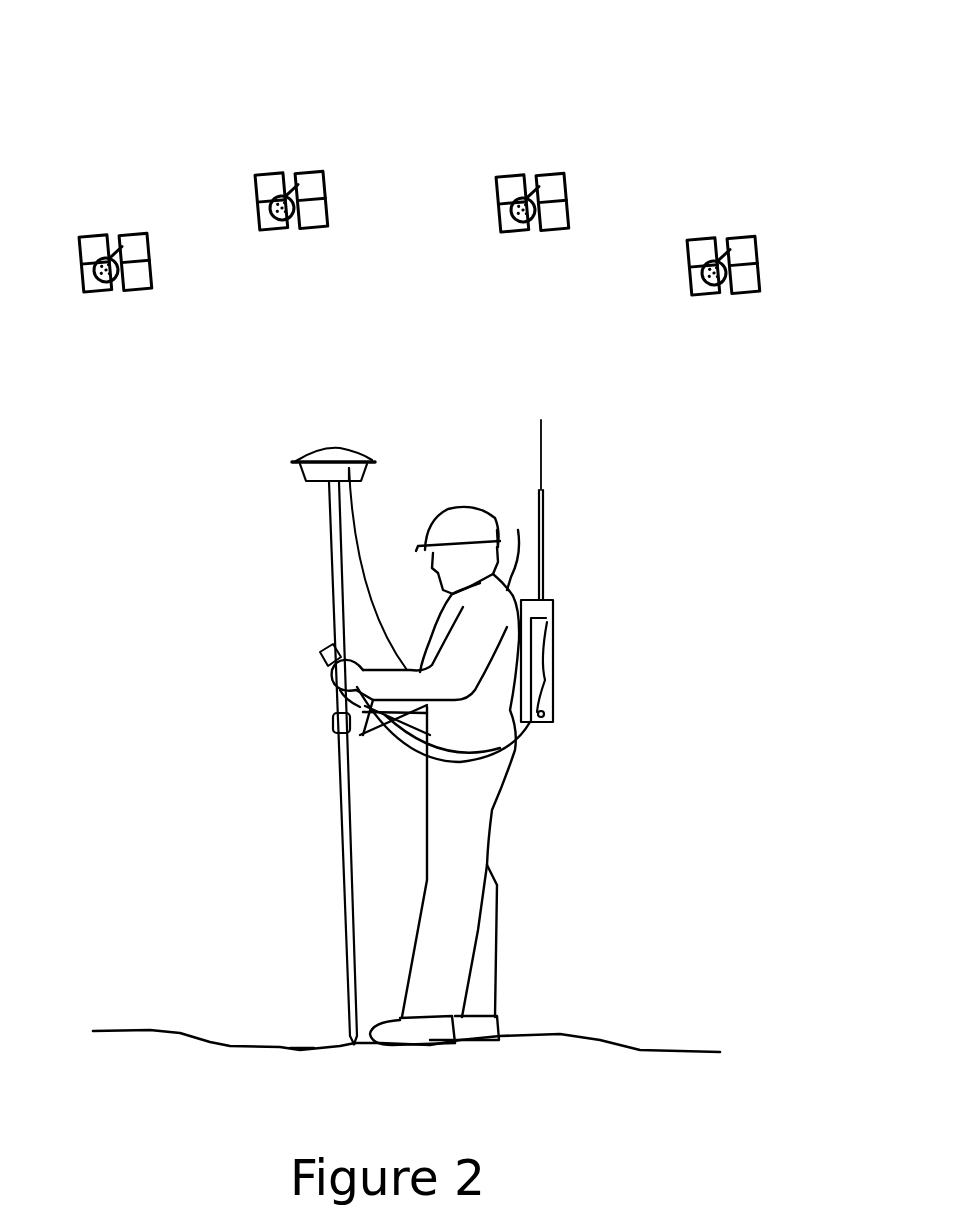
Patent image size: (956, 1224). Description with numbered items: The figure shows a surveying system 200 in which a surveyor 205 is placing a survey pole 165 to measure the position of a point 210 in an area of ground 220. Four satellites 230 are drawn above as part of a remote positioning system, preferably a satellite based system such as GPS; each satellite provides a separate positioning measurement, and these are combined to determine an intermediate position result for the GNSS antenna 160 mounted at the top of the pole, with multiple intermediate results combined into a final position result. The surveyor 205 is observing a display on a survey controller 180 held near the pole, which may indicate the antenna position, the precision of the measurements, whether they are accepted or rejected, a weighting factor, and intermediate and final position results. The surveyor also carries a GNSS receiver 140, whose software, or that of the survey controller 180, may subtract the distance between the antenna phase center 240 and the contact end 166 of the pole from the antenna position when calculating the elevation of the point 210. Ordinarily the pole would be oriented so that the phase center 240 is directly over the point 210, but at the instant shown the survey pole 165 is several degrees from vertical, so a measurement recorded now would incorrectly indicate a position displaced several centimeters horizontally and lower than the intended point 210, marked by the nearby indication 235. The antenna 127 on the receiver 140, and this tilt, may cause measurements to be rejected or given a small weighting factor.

The surveying system 200 is at (724, 126).
The satellites 230 is at (98, 233).
The antenna phase center 240 is at (310, 438).
The GNSS antenna 160 is at (352, 450).
The survey pole 165 is at (328, 563).
The contact end 166 is at (334, 1038).
The survey controller 180 is at (322, 657).
The surveyor 205 is at (530, 513).
The GNSS receiver 140 is at (557, 641).
The radio antenna 127 is at (545, 458).
The ground 220 is at (232, 1045).
The ground point 235 is at (302, 1058).
The point 210 is at (354, 1056).